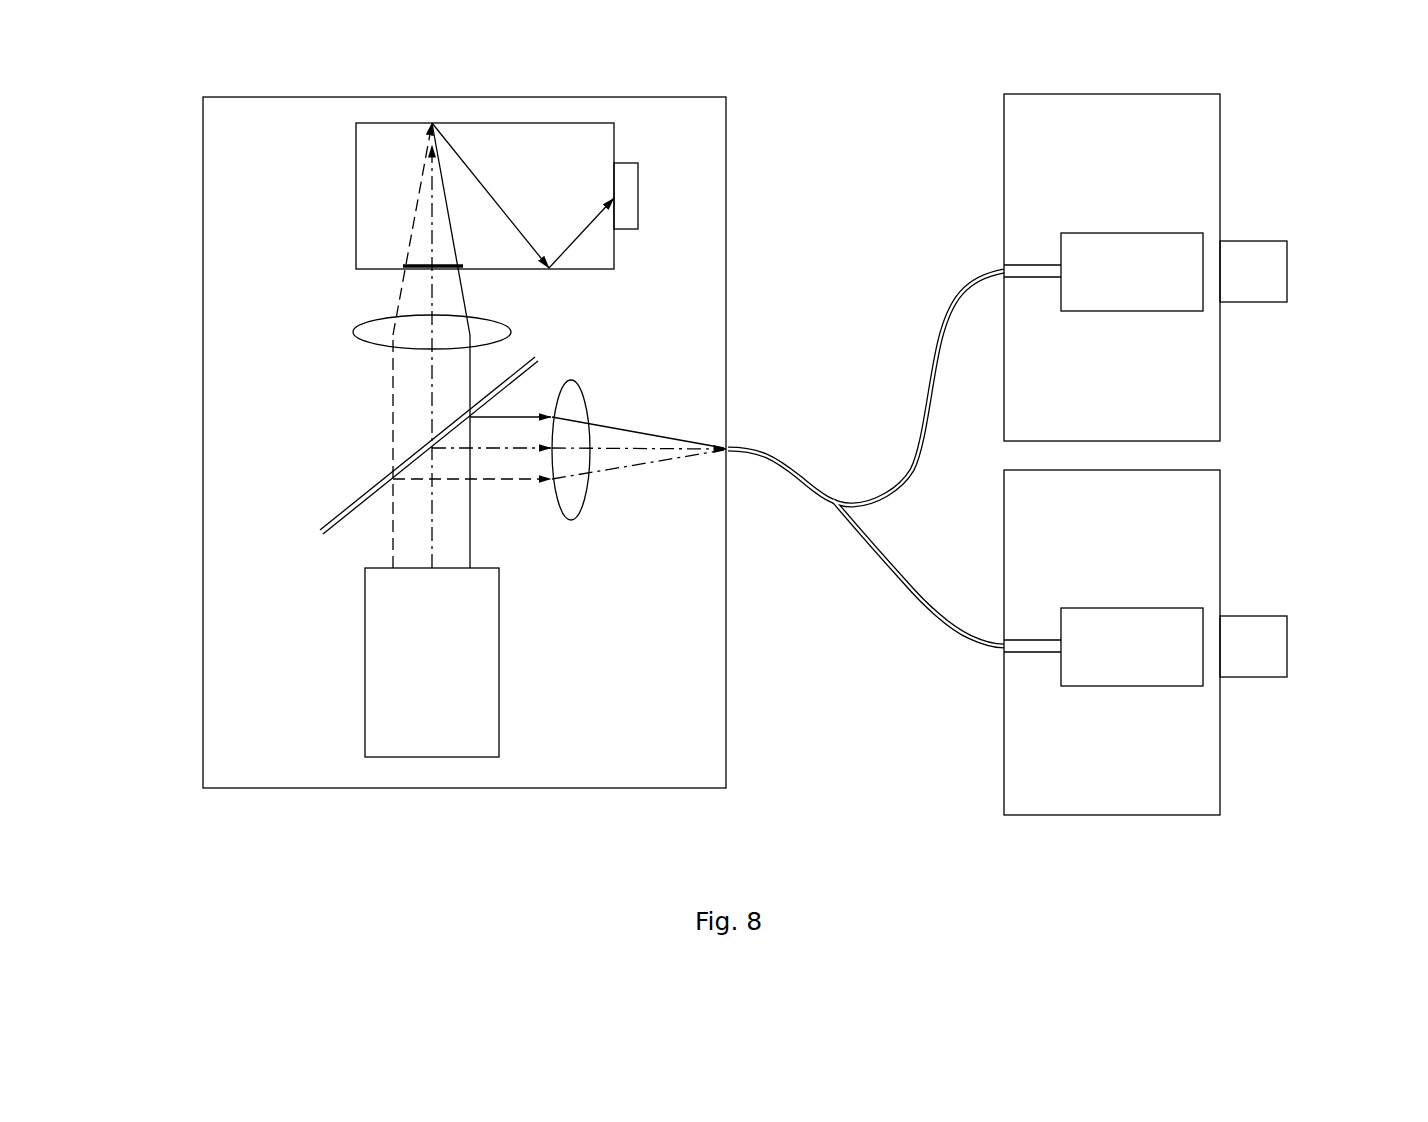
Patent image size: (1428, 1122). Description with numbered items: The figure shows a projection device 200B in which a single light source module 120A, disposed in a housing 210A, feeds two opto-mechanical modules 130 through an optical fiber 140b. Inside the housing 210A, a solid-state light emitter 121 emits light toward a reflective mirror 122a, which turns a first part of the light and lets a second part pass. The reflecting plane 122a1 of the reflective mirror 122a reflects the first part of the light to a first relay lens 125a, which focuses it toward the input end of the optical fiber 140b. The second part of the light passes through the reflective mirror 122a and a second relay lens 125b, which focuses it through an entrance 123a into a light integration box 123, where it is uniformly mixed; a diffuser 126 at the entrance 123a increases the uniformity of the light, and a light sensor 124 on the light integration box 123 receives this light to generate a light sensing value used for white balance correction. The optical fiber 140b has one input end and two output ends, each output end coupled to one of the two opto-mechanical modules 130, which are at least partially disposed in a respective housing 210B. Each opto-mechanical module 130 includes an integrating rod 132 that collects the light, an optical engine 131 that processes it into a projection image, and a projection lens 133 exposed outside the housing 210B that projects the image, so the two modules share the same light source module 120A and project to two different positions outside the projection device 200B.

The projection device 200B is at (157, 42).
The light source module 120A is at (269, 121).
The housing 210A is at (203, 138).
The solid-state light emitter 121 is at (438, 757).
The reflective mirror 122a is at (358, 496).
The reflecting plane 122a1 is at (353, 517).
The light integration box 123 is at (503, 122).
The entrance 123a is at (402, 269).
The light sensor 124 is at (627, 163).
The first relay lens 125a is at (571, 520).
The second relay lens 125b is at (377, 343).
The diffuser 126 is at (403, 266).
The optical fiber 140b is at (895, 583).
The housing 210B is at (1004, 121).
The opto-mechanical module 130 is at (1212, 522).
The optical engine 131 is at (1125, 299).
The integrating rod 132 is at (1027, 272).
The projection lens 133 is at (1348, 435).